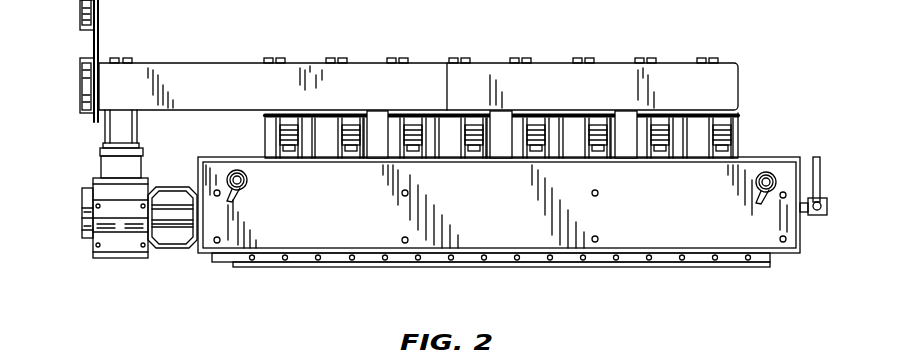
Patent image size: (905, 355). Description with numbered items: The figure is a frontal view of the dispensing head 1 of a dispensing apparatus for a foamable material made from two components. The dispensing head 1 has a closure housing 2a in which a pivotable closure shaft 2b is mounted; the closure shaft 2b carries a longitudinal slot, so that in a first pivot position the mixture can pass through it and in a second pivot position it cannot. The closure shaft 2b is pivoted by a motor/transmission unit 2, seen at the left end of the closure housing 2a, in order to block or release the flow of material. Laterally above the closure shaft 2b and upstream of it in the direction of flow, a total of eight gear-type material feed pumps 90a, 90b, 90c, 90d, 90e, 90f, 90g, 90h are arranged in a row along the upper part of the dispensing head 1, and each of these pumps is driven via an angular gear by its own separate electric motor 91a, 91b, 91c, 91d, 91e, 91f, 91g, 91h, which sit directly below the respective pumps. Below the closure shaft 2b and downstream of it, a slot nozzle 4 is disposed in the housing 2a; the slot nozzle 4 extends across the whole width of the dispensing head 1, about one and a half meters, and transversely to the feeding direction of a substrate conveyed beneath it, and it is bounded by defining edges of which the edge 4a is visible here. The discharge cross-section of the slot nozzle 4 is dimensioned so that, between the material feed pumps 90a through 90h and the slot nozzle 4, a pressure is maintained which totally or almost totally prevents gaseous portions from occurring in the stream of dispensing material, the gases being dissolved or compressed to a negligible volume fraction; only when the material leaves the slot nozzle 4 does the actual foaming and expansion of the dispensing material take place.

The dispensing head 1 is at (764, 48).
The motor/transmission unit 2 is at (122, 235).
The closure housing 2a is at (745, 172).
The closure shaft 2b is at (172, 208).
The slot nozzle 4 is at (584, 270).
The defining edge 4a is at (694, 267).
The material feed pump 90a is at (274, 49).
The material feed pump 90b is at (336, 49).
The material feed pump 90c is at (397, 49).
The material feed pump 90d is at (459, 49).
The material feed pump 90e is at (520, 49).
The material feed pump 90f is at (583, 49).
The material feed pump 90g is at (645, 49).
The material feed pump 90h is at (707, 49).
The electric motor 91a is at (280, 135).
The electric motor 91b is at (342, 135).
The electric motor 91c is at (404, 135).
The electric motor 91d is at (465, 135).
The electric motor 91e is at (527, 135).
The electric motor 91f is at (589, 135).
The electric motor 91g is at (651, 135).
The electric motor 91h is at (713, 135).